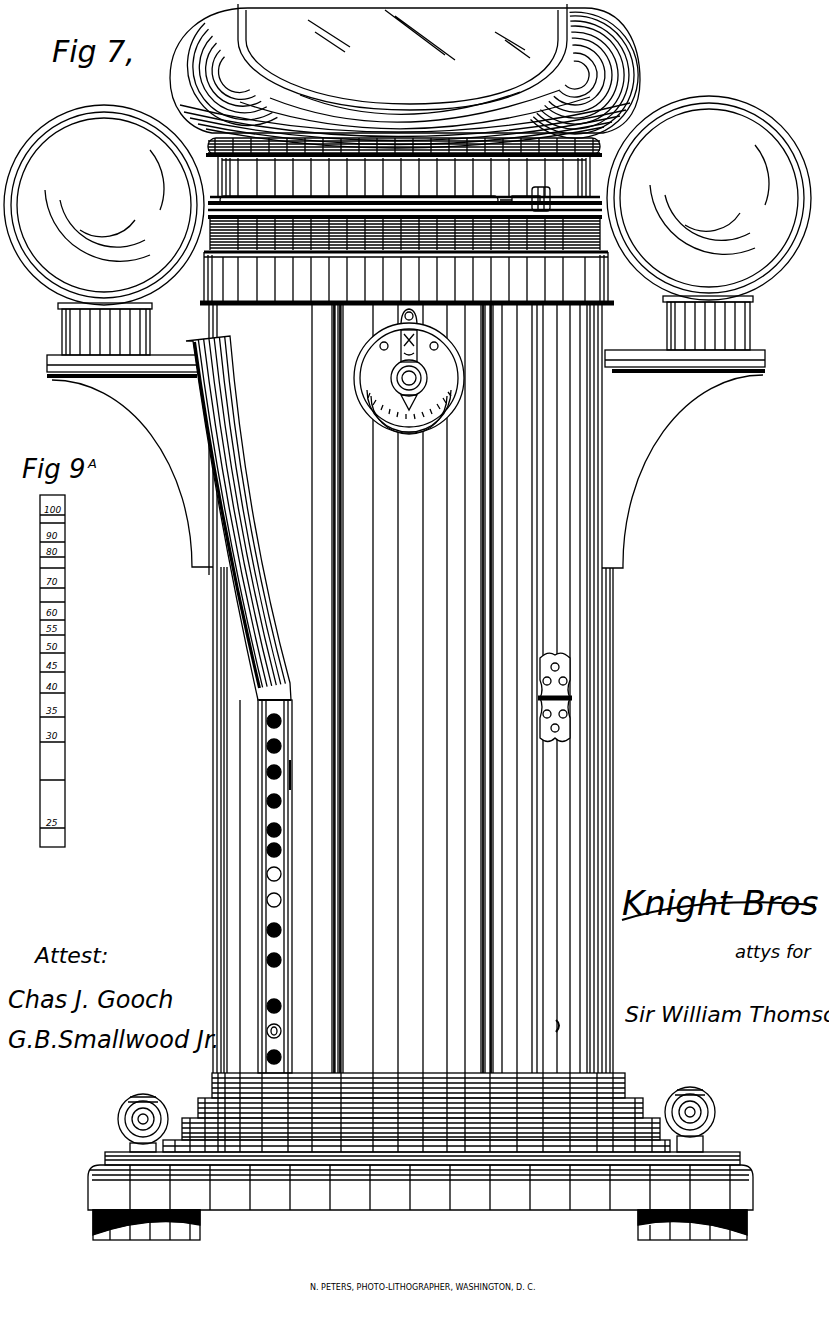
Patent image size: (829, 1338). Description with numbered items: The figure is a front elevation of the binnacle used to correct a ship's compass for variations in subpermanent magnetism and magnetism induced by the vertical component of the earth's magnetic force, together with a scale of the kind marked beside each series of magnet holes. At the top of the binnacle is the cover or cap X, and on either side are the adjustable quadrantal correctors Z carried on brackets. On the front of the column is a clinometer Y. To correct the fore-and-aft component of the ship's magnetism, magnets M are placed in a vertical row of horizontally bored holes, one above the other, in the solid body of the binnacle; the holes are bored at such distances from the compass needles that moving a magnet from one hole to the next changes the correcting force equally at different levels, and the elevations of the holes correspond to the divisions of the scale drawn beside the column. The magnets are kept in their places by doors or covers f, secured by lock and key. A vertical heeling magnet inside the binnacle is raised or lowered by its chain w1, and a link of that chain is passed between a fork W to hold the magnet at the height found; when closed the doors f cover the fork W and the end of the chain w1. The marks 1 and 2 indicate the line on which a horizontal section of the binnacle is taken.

The cover or cap X is at (405, 76).
The quadrantal correctors Z is at (407, 225).
The clinometer Y is at (409, 371).
The fork W is at (262, 732).
The chain w1 is at (292, 778).
The magnets M is at (282, 872).
The doors or covers f is at (379, 684).
The section line 1 2 1 is at (192, 870).
The section line 1 2 is at (626, 868).